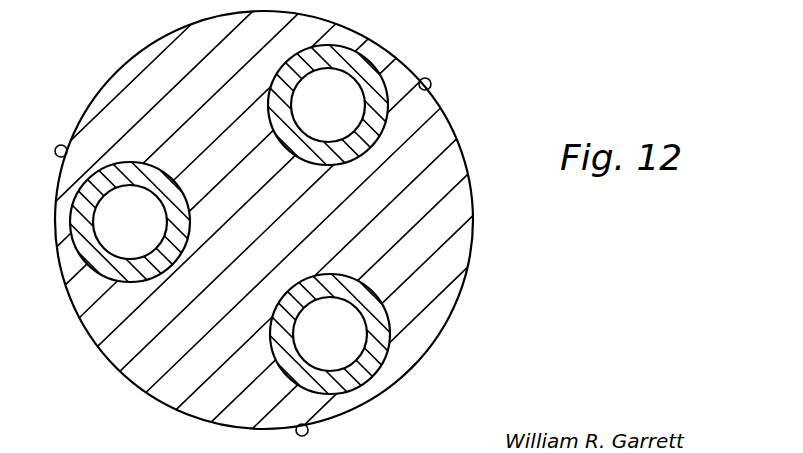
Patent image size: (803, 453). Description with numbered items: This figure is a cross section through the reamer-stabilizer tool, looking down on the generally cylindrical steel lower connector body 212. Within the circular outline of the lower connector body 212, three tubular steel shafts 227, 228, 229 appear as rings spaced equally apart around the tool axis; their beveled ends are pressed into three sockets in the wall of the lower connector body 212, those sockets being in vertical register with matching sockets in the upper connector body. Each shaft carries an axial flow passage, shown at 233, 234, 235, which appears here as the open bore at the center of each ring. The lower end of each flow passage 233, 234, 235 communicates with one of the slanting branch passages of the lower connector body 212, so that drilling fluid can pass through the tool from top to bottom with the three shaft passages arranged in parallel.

The lower connector body 212 is at (143, 382).
The tubular steel shaft 227 is at (78, 218).
The tubular steel shaft 228 is at (367, 372).
The tubular steel shaft 229 is at (358, 68).
The axial flow passage 233 is at (125, 188).
The axial flow passage 234 is at (315, 300).
The axial flow passage 235 is at (305, 72).